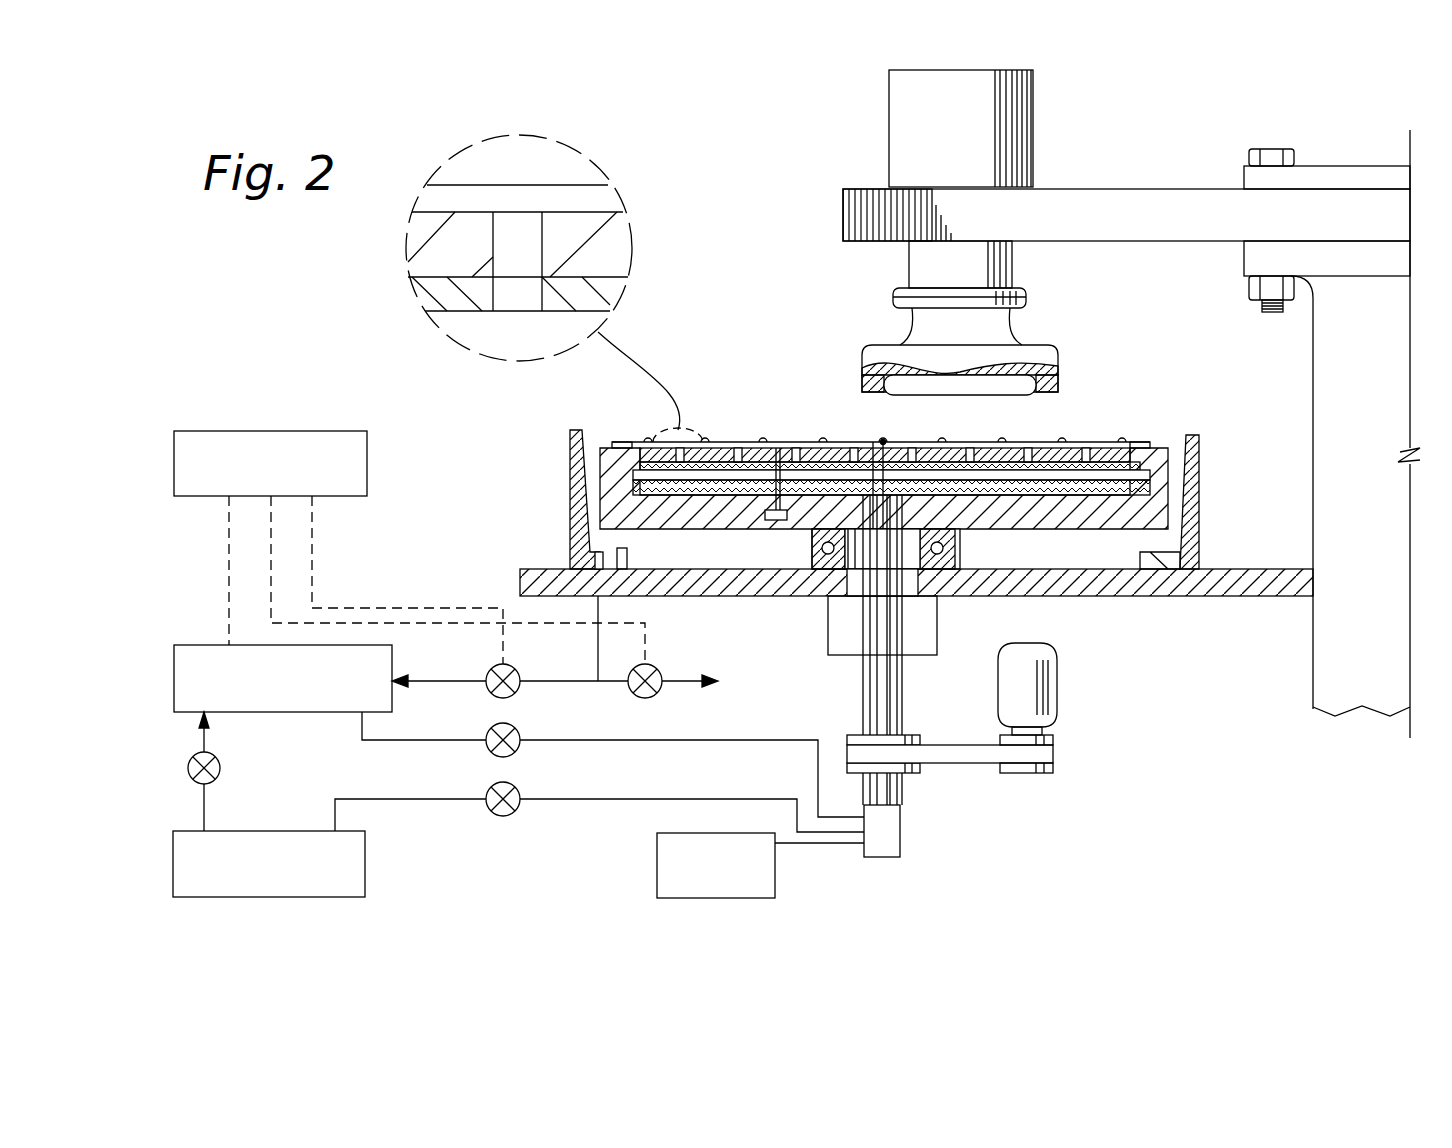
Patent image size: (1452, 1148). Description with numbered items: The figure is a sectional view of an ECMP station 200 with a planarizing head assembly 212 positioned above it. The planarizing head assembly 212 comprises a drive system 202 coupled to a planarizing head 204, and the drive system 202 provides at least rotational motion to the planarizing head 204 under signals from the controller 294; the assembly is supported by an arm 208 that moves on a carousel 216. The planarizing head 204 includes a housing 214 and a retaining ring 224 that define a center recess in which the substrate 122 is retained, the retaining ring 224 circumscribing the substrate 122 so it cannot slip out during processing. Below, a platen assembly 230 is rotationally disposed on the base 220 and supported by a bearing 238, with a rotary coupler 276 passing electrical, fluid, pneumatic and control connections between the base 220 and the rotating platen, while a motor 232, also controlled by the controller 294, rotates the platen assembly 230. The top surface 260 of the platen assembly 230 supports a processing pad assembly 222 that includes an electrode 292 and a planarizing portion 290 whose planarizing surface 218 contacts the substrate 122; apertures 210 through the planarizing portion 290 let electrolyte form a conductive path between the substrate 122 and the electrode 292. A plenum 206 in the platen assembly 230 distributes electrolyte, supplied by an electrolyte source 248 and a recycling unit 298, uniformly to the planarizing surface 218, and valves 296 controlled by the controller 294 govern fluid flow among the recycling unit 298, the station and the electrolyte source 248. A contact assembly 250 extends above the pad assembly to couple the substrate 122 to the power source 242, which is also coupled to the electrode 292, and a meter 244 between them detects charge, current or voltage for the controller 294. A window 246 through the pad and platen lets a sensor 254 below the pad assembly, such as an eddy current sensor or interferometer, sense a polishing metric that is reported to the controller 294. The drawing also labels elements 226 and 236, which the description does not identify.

The substrate 122 is at (900, 388).
The ECMP station 200 is at (736, 138).
The drive system 202 is at (889, 112).
The planarizing head 204 is at (1050, 350).
The plenum 206 is at (1078, 480).
The arm 208 is at (1153, 189).
The apertures 210 is at (540, 240).
The planarizing head assembly 212 is at (862, 273).
The housing 214 is at (1060, 364).
The carousel 216 is at (1313, 383).
The planarizing surface 218 is at (930, 462).
The base 220 is at (1232, 597).
The processing pad assembly 222 is at (466, 157).
The retaining ring 224 is at (1060, 383).
The drain pipe 226 is at (598, 576).
The platen assembly 230 is at (1175, 469).
The motor 232 is at (1057, 690).
The platen body 236 is at (612, 466).
The bearing 238 is at (948, 558).
The power source 242 is at (657, 878).
The meter 244 is at (826, 845).
The window 246 is at (222, 768).
The electrolyte source 248 is at (366, 872).
The contact assembly 250 is at (883, 442).
The sensor 254 is at (776, 522).
The top surface 260 is at (970, 470).
The rotary coupler 276 is at (900, 835).
The planarizing portion 290 is at (437, 240).
The electrode 292 is at (440, 290).
The controller 294 is at (257, 431).
The valves 296 is at (515, 693).
The recycling unit 298 is at (395, 699).